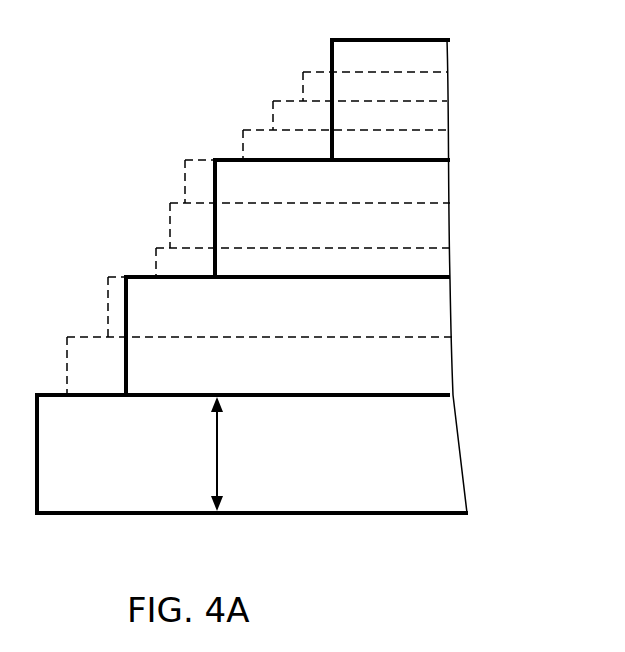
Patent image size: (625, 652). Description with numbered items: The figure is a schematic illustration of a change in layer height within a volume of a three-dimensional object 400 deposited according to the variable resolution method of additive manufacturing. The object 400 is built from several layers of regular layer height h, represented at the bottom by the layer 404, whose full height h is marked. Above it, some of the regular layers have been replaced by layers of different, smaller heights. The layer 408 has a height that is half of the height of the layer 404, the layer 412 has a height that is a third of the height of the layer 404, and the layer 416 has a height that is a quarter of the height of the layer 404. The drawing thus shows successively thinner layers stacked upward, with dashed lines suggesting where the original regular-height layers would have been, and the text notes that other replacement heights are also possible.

The object 400 is at (155, 94).
The layer 404 is at (422, 466).
The layer 408 is at (410, 307).
The layer 412 is at (417, 233).
The layer 416 is at (423, 56).